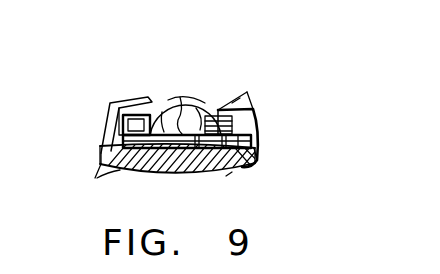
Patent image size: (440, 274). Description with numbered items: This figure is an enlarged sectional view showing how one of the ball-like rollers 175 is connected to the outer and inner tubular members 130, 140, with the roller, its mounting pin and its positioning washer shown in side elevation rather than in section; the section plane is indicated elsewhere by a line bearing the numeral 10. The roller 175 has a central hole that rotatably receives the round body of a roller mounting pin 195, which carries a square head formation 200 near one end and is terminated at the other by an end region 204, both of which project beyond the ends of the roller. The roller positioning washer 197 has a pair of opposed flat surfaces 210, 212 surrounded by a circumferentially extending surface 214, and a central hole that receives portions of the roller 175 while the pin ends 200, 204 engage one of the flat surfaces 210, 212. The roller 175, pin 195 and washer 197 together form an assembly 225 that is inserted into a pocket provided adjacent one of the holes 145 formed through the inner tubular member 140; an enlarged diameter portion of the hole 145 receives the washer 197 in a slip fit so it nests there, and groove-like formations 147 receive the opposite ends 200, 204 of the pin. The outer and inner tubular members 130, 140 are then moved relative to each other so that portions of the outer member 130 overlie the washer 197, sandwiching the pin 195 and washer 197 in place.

The section line 10 is at (177, 104).
The outer tubular member 130 is at (253, 154).
The inner tubular member 140 is at (258, 112).
The hole 145 is at (158, 105).
The groove-like formation 147 is at (99, 139).
The roller 175 is at (160, 103).
The roller mounting pin 195 is at (232, 103).
The roller positioning washer 197 is at (97, 178).
The square head formation 200 is at (98, 110).
The end region 204 is at (251, 101).
The flat surface 210 is at (170, 98).
The flat surface 212 is at (155, 174).
The circumferentially extending surface 214 is at (181, 99).
The assembly 225 is at (232, 174).